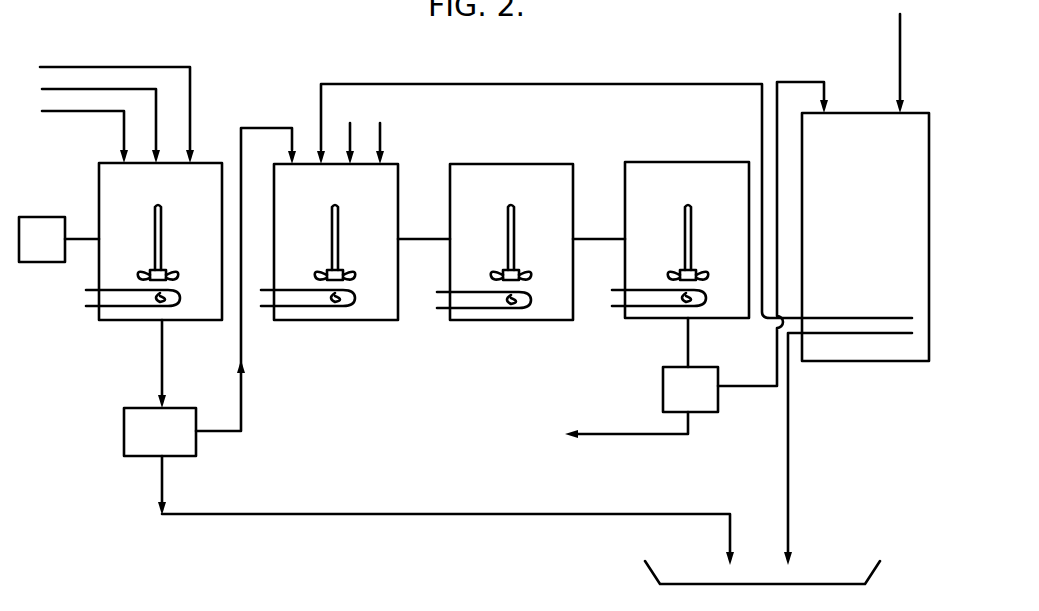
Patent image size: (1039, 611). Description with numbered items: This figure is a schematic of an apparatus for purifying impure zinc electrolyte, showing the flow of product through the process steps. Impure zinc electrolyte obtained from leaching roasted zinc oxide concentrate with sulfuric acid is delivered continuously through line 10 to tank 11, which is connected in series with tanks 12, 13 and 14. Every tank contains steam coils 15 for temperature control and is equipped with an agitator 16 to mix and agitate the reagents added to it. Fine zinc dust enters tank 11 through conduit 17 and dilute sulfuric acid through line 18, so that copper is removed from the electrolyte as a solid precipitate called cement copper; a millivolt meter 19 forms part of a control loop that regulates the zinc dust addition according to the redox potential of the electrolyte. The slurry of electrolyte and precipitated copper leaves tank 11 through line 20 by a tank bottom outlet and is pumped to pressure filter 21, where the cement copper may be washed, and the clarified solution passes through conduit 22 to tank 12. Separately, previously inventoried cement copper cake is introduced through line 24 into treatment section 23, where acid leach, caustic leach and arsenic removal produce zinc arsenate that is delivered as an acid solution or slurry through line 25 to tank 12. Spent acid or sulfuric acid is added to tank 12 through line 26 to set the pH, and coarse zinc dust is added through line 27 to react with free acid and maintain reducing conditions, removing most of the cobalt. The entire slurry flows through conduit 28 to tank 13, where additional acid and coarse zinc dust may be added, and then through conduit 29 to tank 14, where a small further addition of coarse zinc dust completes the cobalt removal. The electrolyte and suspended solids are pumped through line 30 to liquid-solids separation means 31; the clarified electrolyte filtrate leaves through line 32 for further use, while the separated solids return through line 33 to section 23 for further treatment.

The line 10 is at (193, 86).
The tank 11 is at (99, 318).
The tank 12 is at (398, 320).
The tank 13 is at (573, 320).
The tank 14 is at (726, 165).
The steam coils 15 is at (125, 322).
The agitators 16 is at (155, 238).
The conduit 17 is at (156, 108).
The line 18 is at (124, 132).
The millivolt meter 19 is at (43, 220).
The line 20 is at (164, 360).
The pressure filter 21 is at (124, 430).
The conduit 22 is at (244, 392).
The treatment section 23 is at (903, 362).
The line 24 is at (902, 45).
The line 25 is at (556, 86).
The line 26 is at (380, 124).
The line 27 is at (350, 124).
The conduit 28 is at (426, 239).
The conduit 29 is at (601, 239).
The line 30 is at (690, 346).
The liquid-solids separation means 31 is at (663, 390).
The line 32 is at (606, 437).
The line 33 is at (756, 392).